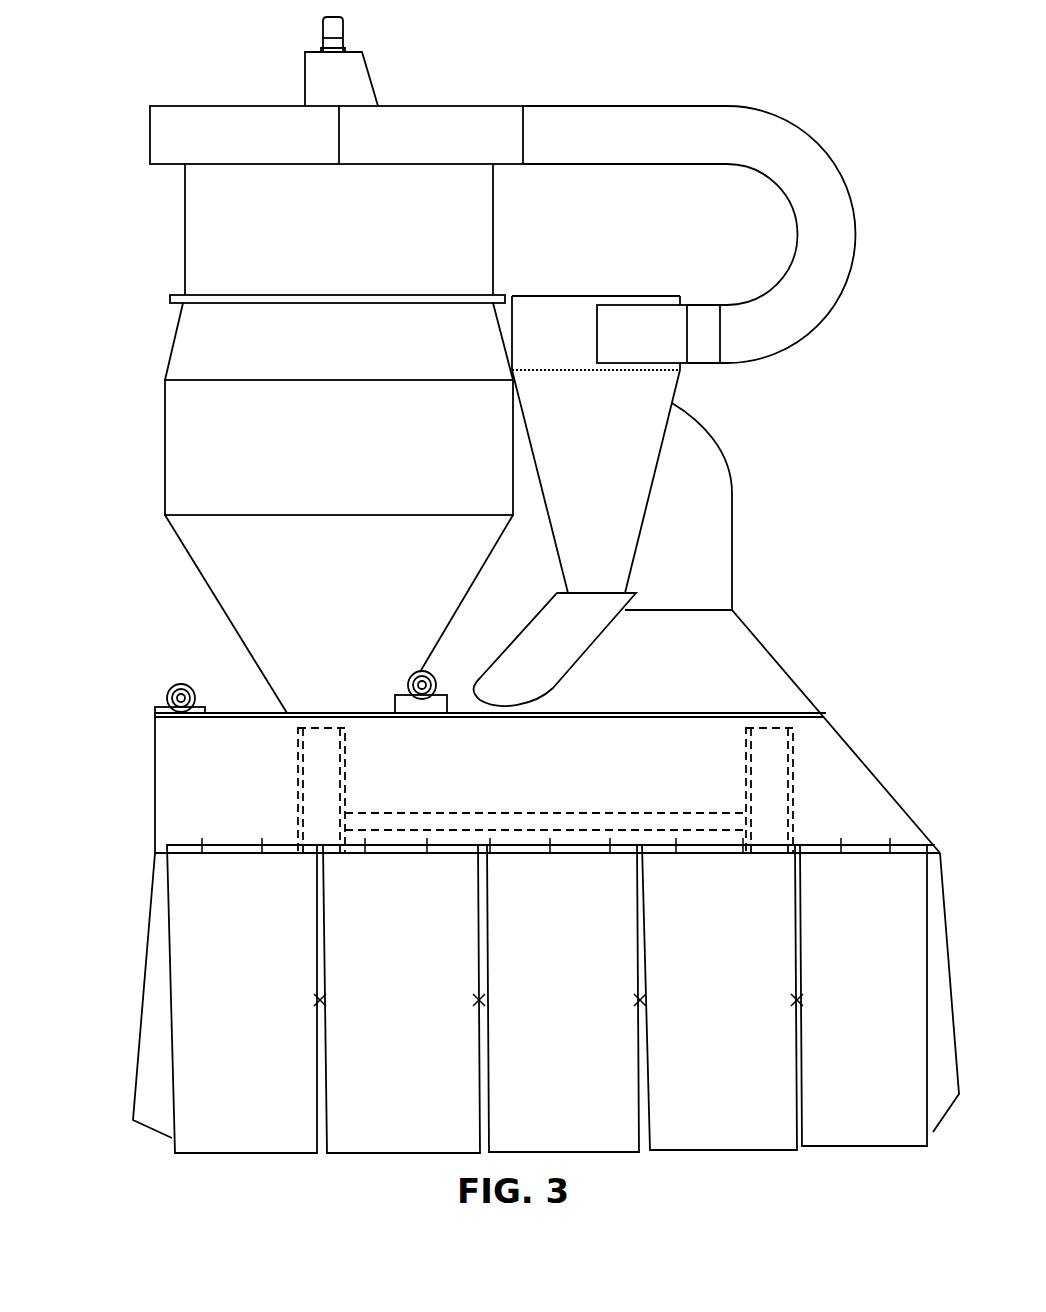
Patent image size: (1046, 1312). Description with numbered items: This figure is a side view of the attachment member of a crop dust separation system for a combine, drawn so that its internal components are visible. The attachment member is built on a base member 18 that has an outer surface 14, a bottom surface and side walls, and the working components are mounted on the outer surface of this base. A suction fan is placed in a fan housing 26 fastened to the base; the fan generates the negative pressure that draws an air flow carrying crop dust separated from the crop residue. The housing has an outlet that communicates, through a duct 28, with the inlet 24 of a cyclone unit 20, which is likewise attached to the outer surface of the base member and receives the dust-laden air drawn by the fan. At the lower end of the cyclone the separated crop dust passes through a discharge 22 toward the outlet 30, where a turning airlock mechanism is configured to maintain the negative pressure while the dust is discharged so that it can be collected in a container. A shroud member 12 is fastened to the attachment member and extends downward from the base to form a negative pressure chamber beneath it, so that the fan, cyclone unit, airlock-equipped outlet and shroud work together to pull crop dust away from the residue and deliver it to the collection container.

The filter bags 12 is at (841, 847).
The conveyor 14 is at (247, 713).
The housing 18 is at (155, 782).
The cyclone separator 20 is at (625, 512).
The discharge chute 22 is at (452, 705).
The inlet 24 is at (688, 337).
The dust collector 26 is at (367, 255).
The return duct 28 is at (525, 133).
The outlet 30 is at (337, 705).